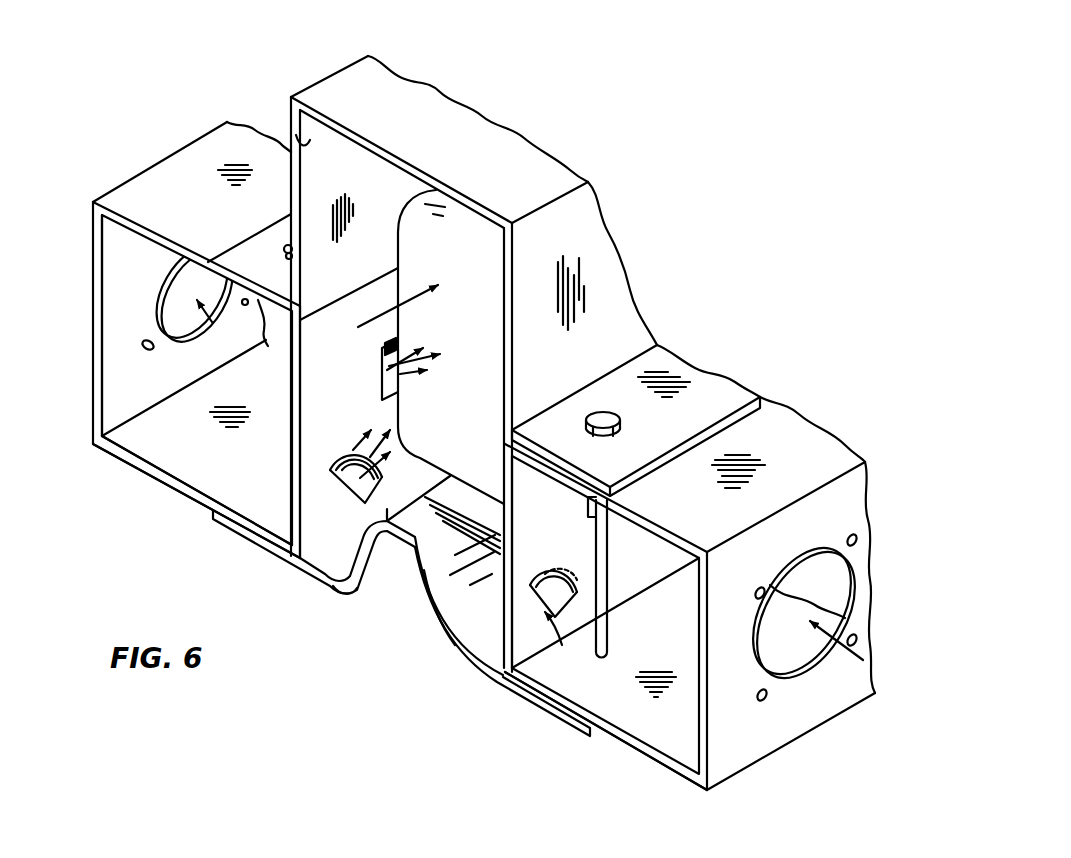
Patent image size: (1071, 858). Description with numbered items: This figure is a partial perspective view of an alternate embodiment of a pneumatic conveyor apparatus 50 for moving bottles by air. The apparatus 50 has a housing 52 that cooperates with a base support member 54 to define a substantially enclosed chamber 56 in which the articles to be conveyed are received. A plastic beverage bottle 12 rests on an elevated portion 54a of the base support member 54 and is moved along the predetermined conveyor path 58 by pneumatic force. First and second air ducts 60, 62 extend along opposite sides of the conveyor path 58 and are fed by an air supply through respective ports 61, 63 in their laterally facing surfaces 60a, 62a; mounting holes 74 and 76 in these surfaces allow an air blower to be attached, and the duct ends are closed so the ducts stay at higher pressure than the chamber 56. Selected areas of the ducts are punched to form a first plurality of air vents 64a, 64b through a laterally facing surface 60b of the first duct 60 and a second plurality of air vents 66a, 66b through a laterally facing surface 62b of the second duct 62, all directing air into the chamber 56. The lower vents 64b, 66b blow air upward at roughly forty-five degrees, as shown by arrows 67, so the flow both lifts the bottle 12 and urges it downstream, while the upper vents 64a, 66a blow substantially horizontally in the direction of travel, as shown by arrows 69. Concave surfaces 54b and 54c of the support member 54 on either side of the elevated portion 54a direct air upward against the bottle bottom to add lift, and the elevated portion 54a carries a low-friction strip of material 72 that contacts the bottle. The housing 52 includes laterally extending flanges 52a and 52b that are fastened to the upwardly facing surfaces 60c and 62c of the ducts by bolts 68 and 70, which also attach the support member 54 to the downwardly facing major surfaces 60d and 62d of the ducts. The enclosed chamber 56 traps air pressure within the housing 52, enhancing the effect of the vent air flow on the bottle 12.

The bottle 12 is at (412, 230).
The pneumatic conveyor apparatus 50 is at (528, 97).
The housing 52 is at (593, 250).
The laterally extending flange 52a is at (193, 211).
The laterally extending flange 52b is at (703, 380).
The base support member 54 is at (392, 612).
The elevated portion 54a is at (413, 555).
The concave surface 54b is at (340, 598).
The concave surface 54c is at (433, 610).
The substantially enclosed chamber 56 is at (291, 148).
The conveyor path 58 is at (387, 312).
The first air duct 60 is at (143, 172).
The laterally facing surface 60a is at (118, 304).
The laterally facing surface 60b is at (311, 447).
The upwardly facing surface 60c is at (208, 147).
The downwardly facing major surface 60d is at (163, 486).
The port 61 is at (210, 322).
The second air duct 62 is at (817, 433).
The laterally facing surface 62a is at (783, 728).
The laterally facing surface 62b is at (628, 575).
The upwardly facing surface 62c is at (787, 410).
The downwardly facing major surface 62d is at (630, 750).
The port 63 is at (837, 647).
The upper air vent 64a is at (382, 377).
The lower air vent 64b is at (343, 500).
The upper air vent 66a is at (585, 505).
The lower air vent 66b is at (540, 583).
The arrows 67 is at (360, 443).
The bolt 68 is at (272, 223).
The arrows 69 is at (410, 347).
The bolt 70 is at (597, 411).
The strip of material 72 is at (457, 493).
The mounting holes 74 is at (148, 351).
The mounting holes 76 is at (762, 590).